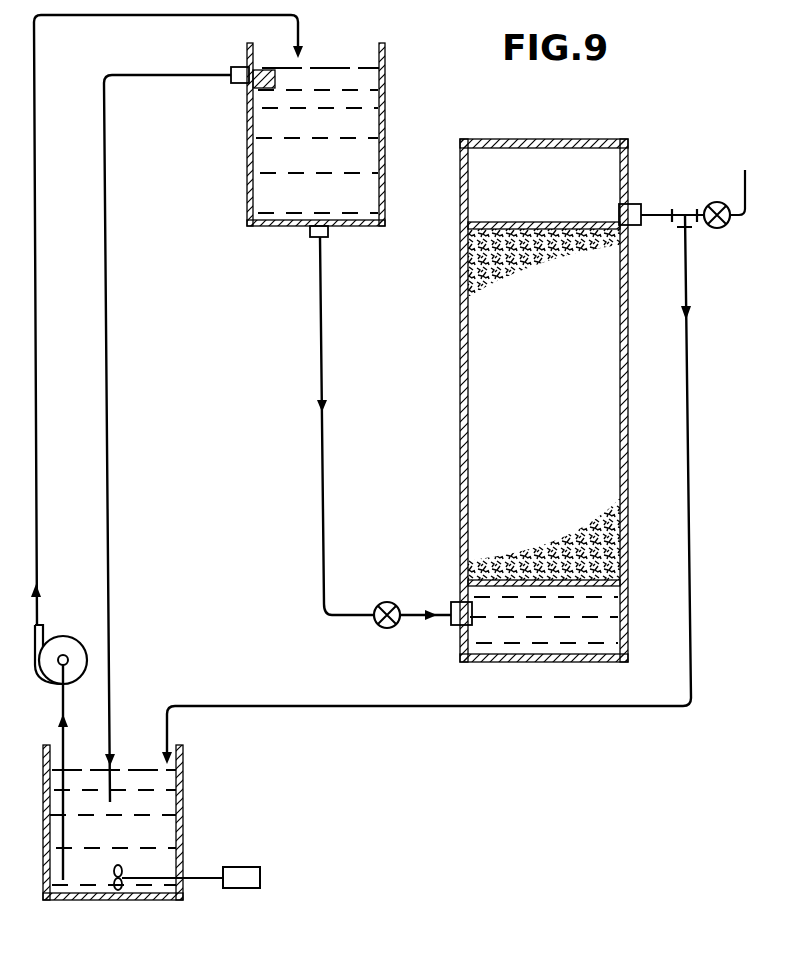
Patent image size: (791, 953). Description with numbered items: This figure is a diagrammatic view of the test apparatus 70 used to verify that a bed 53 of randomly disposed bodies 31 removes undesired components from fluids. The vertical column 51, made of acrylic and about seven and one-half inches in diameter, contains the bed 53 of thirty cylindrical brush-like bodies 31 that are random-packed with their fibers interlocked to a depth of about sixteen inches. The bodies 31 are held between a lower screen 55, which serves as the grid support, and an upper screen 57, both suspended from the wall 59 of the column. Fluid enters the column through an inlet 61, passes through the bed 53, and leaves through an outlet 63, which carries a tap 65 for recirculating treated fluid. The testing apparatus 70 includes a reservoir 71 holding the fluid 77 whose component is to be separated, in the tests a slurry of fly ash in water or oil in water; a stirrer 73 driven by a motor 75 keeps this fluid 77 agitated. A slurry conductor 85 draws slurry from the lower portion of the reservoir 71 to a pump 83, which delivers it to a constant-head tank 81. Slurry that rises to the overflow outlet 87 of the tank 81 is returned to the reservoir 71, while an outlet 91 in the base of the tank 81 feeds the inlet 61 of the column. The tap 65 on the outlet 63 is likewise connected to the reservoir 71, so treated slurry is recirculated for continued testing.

The bodies 31 is at (531, 262).
The vertical column 51 is at (550, 136).
The bed 53 is at (551, 377).
The screen 55 is at (538, 586).
The screen 57 is at (532, 222).
The wall 59 is at (628, 302).
The inlet 61 is at (456, 603).
The outlet 63 is at (640, 212).
The tap 65 is at (685, 215).
The apparatus 70 is at (149, 397).
The reservoir 71 is at (122, 838).
The stirrer 73 is at (114, 870).
The motor 75 is at (246, 867).
The fluid 77 is at (170, 807).
The tank 81 is at (327, 162).
The pump 83 is at (58, 637).
The slurry conductor 85 is at (60, 705).
The overflow outlet 87 is at (238, 67).
The outlet 91 is at (312, 235).